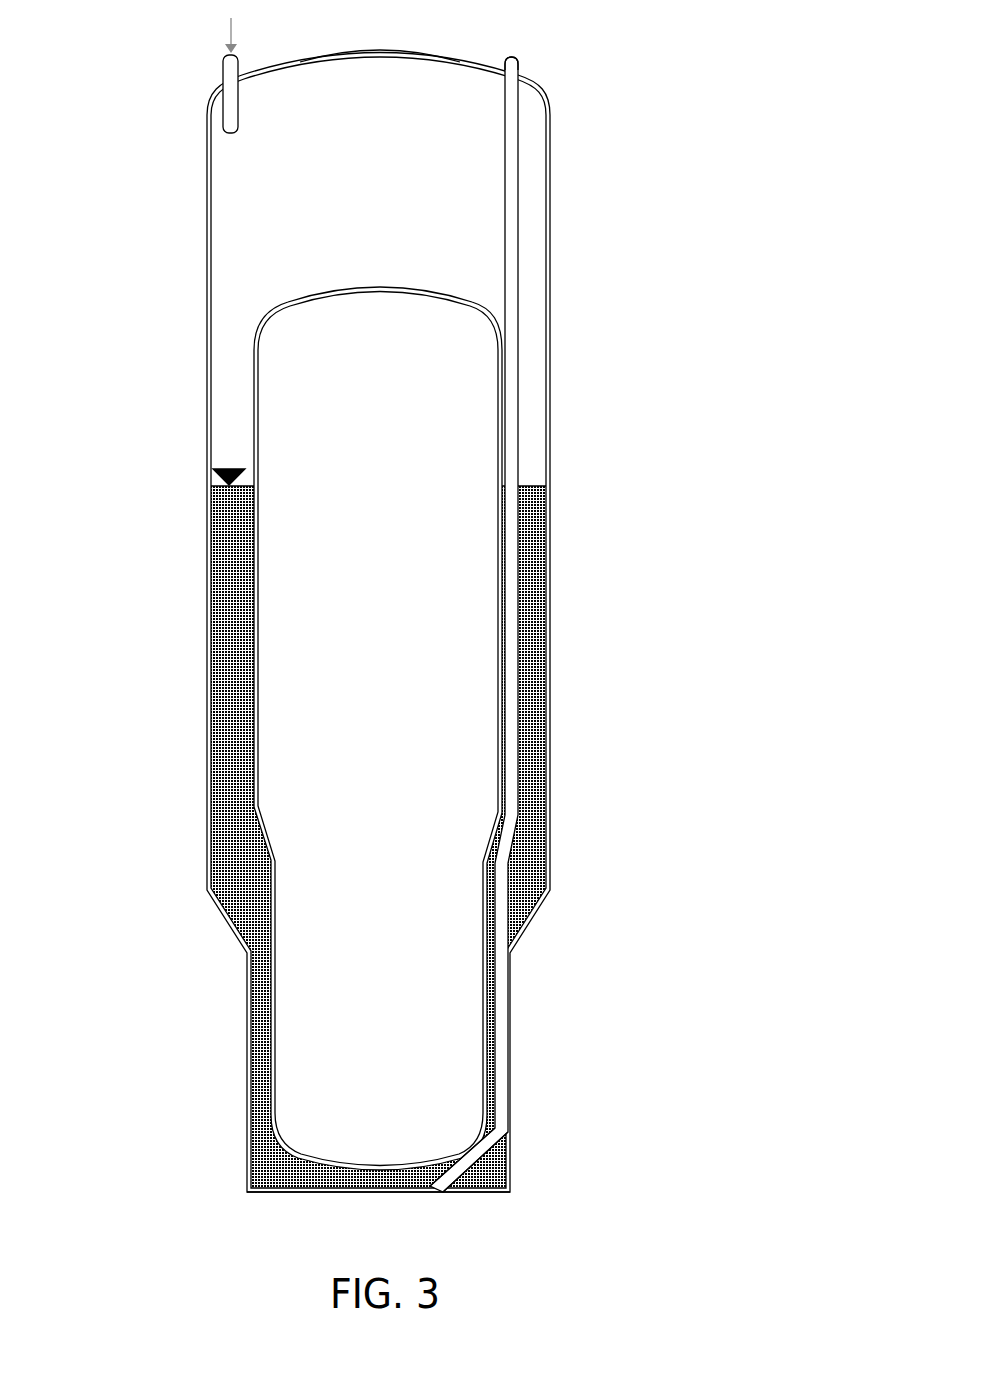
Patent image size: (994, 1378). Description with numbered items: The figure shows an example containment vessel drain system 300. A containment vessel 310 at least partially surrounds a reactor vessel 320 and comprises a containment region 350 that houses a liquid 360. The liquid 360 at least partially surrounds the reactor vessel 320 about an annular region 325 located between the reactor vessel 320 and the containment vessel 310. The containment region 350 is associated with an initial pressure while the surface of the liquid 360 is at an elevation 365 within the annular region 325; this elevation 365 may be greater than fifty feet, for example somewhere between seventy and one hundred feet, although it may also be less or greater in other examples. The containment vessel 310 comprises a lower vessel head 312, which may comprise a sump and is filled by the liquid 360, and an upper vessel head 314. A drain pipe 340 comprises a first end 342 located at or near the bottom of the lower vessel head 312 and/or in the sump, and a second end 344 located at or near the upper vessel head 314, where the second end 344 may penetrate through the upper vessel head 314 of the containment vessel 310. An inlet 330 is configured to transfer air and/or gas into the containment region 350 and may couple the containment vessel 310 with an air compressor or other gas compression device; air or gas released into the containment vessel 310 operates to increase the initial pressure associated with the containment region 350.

The containment vessel drain system 300 is at (676, 76).
The containment vessel 310 is at (207, 275).
The lower vessel head 312 is at (352, 1193).
The upper vessel head 314 is at (367, 47).
The reactor vessel 320 is at (327, 292).
The annular region 325 is at (530, 420).
The inlet 330 is at (222, 78).
The drain pipe 340 is at (512, 285).
The first end 342 is at (457, 1173).
The second end 344 is at (519, 72).
The containment region 350 is at (397, 141).
The liquid 360 is at (235, 707).
The elevation 365 is at (210, 483).